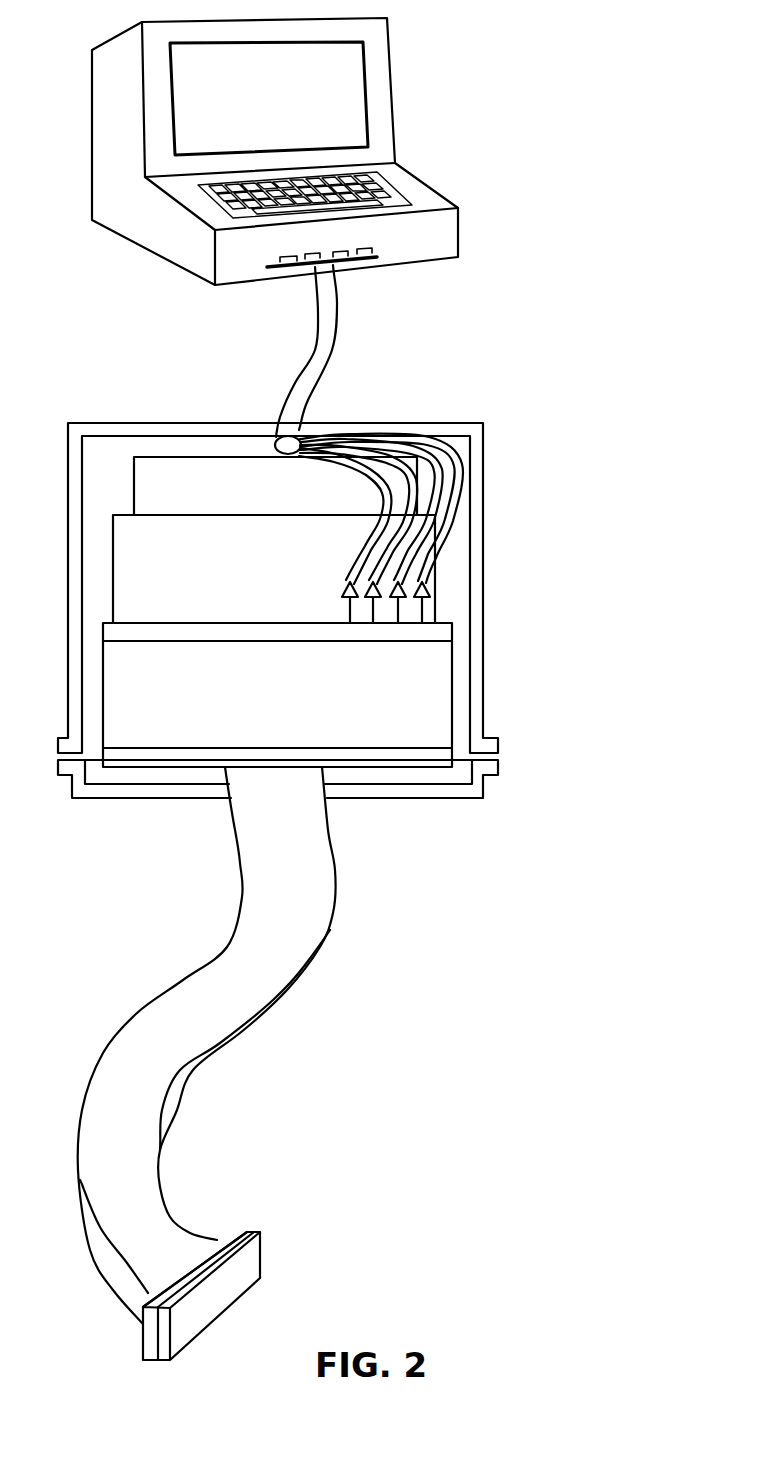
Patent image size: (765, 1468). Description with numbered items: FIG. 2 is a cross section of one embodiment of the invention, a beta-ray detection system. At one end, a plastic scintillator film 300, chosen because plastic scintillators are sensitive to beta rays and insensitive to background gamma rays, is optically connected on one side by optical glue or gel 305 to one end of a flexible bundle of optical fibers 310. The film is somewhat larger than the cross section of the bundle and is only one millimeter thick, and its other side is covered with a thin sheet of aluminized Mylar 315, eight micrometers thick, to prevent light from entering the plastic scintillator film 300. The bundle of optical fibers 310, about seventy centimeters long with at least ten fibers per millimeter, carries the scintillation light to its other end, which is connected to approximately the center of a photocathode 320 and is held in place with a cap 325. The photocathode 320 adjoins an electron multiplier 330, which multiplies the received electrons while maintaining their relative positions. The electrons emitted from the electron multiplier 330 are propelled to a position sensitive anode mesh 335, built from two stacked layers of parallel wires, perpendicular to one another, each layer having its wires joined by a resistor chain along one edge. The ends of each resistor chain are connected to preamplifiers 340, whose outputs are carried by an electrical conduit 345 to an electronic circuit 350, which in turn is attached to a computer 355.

The plastic scintillator film 300 is at (233, 1237).
The optical glue or gel 305 is at (222, 1240).
The bundle of optical fibers 310 is at (282, 988).
The aluminized Mylar sheet 315 is at (250, 1263).
The photocathode 320 is at (435, 757).
The cap 325 is at (480, 788).
The electron multiplier 330 is at (440, 685).
The position sensitive anode mesh 335 is at (440, 632).
The preamplifiers 340 is at (427, 592).
The electrical conduit 345 is at (307, 365).
The electronic circuit 350 is at (377, 258).
The computer 355 is at (395, 117).